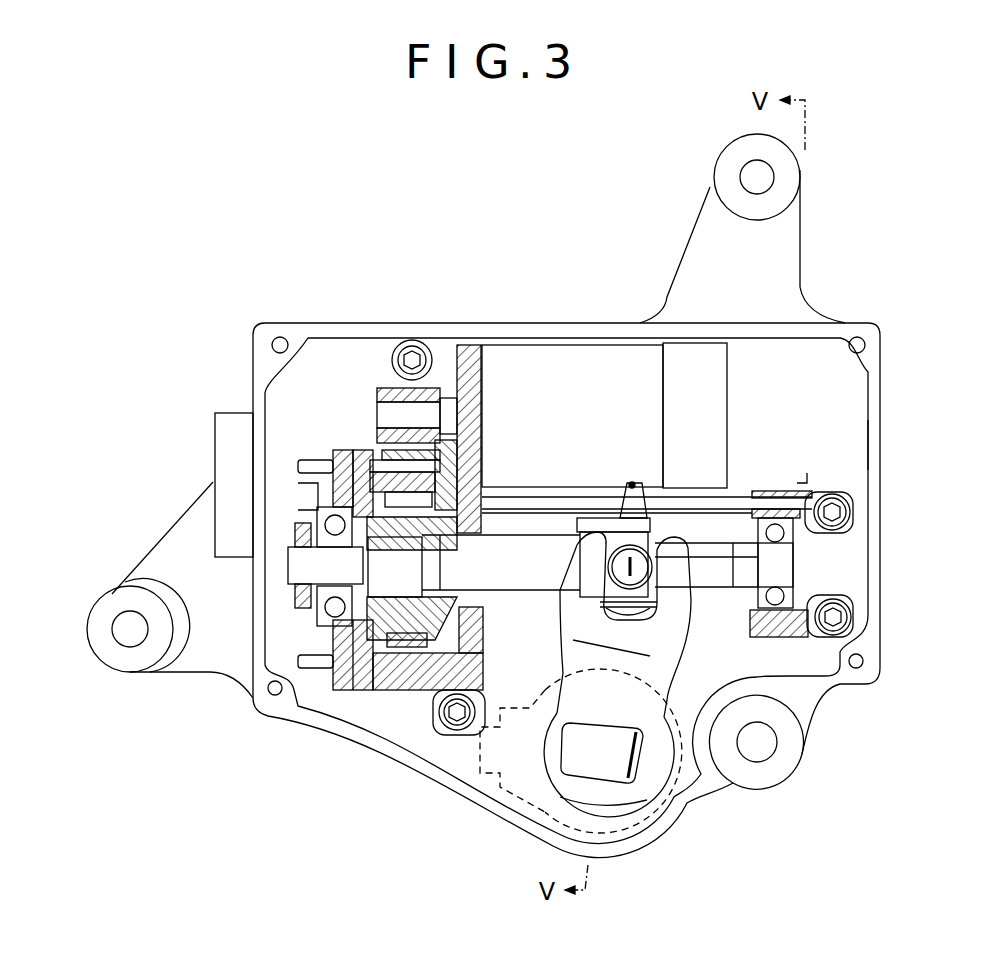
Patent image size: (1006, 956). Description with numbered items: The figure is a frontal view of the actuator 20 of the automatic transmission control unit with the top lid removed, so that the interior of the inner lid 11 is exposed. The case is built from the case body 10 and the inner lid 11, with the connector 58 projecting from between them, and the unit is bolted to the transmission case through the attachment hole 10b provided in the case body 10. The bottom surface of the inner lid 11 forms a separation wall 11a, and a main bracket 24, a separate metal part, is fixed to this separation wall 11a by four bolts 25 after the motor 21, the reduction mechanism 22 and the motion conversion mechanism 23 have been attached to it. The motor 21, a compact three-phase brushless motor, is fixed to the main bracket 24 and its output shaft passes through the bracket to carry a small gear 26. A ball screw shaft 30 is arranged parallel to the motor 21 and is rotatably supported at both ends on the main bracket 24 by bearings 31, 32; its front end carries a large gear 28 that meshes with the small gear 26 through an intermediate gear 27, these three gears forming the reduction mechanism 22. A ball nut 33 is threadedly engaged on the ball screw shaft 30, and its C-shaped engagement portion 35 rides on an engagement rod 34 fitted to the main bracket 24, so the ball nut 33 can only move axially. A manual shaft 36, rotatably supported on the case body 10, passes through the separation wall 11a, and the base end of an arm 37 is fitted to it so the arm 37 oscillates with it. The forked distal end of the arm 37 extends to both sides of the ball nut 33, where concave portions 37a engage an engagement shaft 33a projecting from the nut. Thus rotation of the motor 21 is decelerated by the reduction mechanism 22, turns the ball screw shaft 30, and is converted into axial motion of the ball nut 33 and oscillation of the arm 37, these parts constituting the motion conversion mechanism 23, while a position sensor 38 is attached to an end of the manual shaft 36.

The case body 10 is at (790, 253).
The attachment hole 10b is at (745, 178).
The inner lid 11 is at (885, 407).
The separation wall 11a is at (808, 437).
The actuator 20 is at (815, 358).
The motor 21 is at (560, 362).
The reduction mechanism 22 is at (330, 370).
The motion conversion mechanism 23 is at (723, 648).
The main bracket 24 is at (388, 690).
The bolts 25 is at (413, 348).
The small gear 26 is at (380, 395).
The intermediate gear 27 is at (350, 455).
The large gear 28 is at (345, 662).
The ball screw shaft 30 is at (505, 550).
The bearing 31 is at (320, 510).
The bearing 32 is at (795, 540).
The ball nut 33 is at (605, 522).
The engagement shaft 33a is at (643, 570).
The engagement rod 34 is at (740, 503).
The C-shaped engagement portion 35 is at (628, 497).
The manual shaft 36 is at (620, 758).
The arm 37 is at (657, 643).
The concave portions 37a is at (673, 563).
The position sensor 38 is at (618, 830).
The connector 58 is at (235, 446).